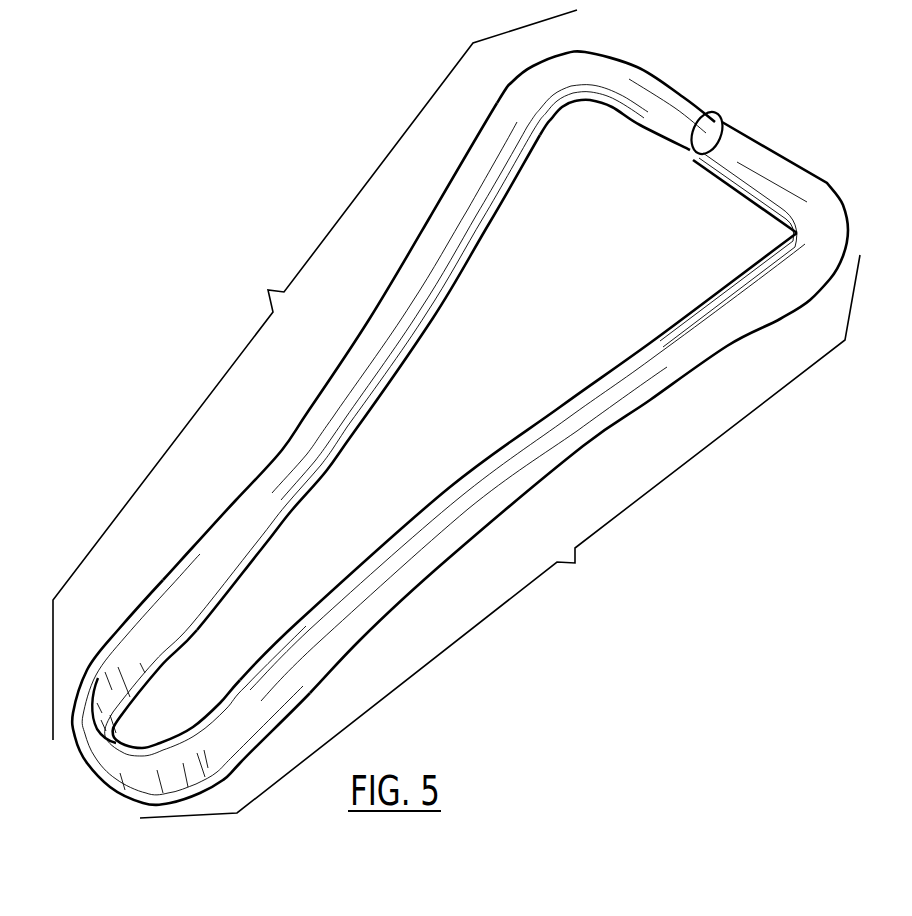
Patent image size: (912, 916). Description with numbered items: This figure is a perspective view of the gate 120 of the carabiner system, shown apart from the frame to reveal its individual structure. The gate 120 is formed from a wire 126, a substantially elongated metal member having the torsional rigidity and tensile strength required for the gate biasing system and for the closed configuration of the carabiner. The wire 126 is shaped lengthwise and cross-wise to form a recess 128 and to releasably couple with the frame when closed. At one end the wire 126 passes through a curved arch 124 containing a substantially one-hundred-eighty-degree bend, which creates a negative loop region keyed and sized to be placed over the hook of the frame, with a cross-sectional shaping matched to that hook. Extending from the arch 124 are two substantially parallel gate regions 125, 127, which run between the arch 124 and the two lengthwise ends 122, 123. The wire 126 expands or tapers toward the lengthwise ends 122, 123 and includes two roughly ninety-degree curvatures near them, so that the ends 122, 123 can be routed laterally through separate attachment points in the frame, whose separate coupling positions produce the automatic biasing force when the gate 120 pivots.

The gate 120 is at (343, 107).
The lengthwise end 122 is at (708, 131).
The lengthwise end 123 is at (696, 162).
The arch 124 is at (124, 757).
The parallel gate region 125 is at (500, 536).
The wire 126 is at (418, 280).
The parallel gate region 127 is at (315, 375).
The recess 128 is at (528, 371).